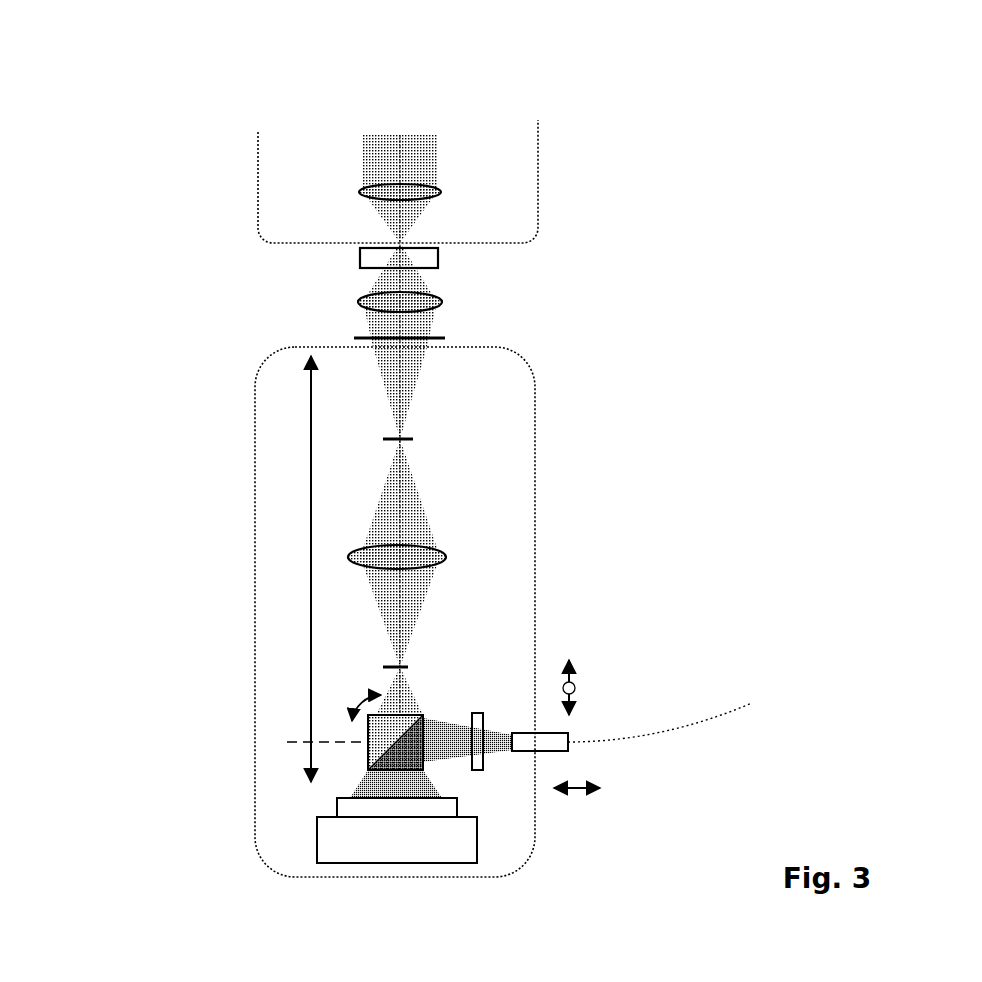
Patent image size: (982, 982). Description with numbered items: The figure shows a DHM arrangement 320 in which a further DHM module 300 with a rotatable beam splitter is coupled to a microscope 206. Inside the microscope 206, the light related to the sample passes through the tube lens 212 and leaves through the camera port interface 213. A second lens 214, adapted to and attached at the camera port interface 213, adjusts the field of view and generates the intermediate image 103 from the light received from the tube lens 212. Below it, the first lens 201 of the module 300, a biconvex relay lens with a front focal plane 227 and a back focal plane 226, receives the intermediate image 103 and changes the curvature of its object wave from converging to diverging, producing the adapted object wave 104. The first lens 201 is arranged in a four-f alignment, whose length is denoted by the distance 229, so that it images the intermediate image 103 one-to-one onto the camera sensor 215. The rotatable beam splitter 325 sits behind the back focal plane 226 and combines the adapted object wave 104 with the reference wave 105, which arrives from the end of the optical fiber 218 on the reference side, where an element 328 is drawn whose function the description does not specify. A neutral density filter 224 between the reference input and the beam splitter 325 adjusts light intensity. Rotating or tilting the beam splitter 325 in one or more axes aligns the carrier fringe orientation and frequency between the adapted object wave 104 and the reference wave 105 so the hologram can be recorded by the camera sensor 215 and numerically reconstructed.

The DHM arrangement 320 is at (824, 104).
The microscope 206 is at (258, 192).
The tube lens 212 is at (440, 192).
The camera port interface 213 is at (438, 265).
The second lens 214 is at (358, 300).
The intermediate image 103 is at (368, 338).
The DHM module 300 is at (535, 415).
The front focal plane 227 is at (413, 439).
The distance 4f 229 is at (313, 458).
The first lens 201 is at (445, 552).
The back focal plane 226 is at (408, 667).
The adapted object wave 104 is at (397, 688).
The rotatable beam splitter 325 is at (368, 757).
The neutral density filter 224 is at (483, 765).
The detector 328 is at (560, 750).
The optical fiber 218 is at (683, 728).
The reference wave 105 is at (442, 742).
The camera sensor 215 is at (337, 813).